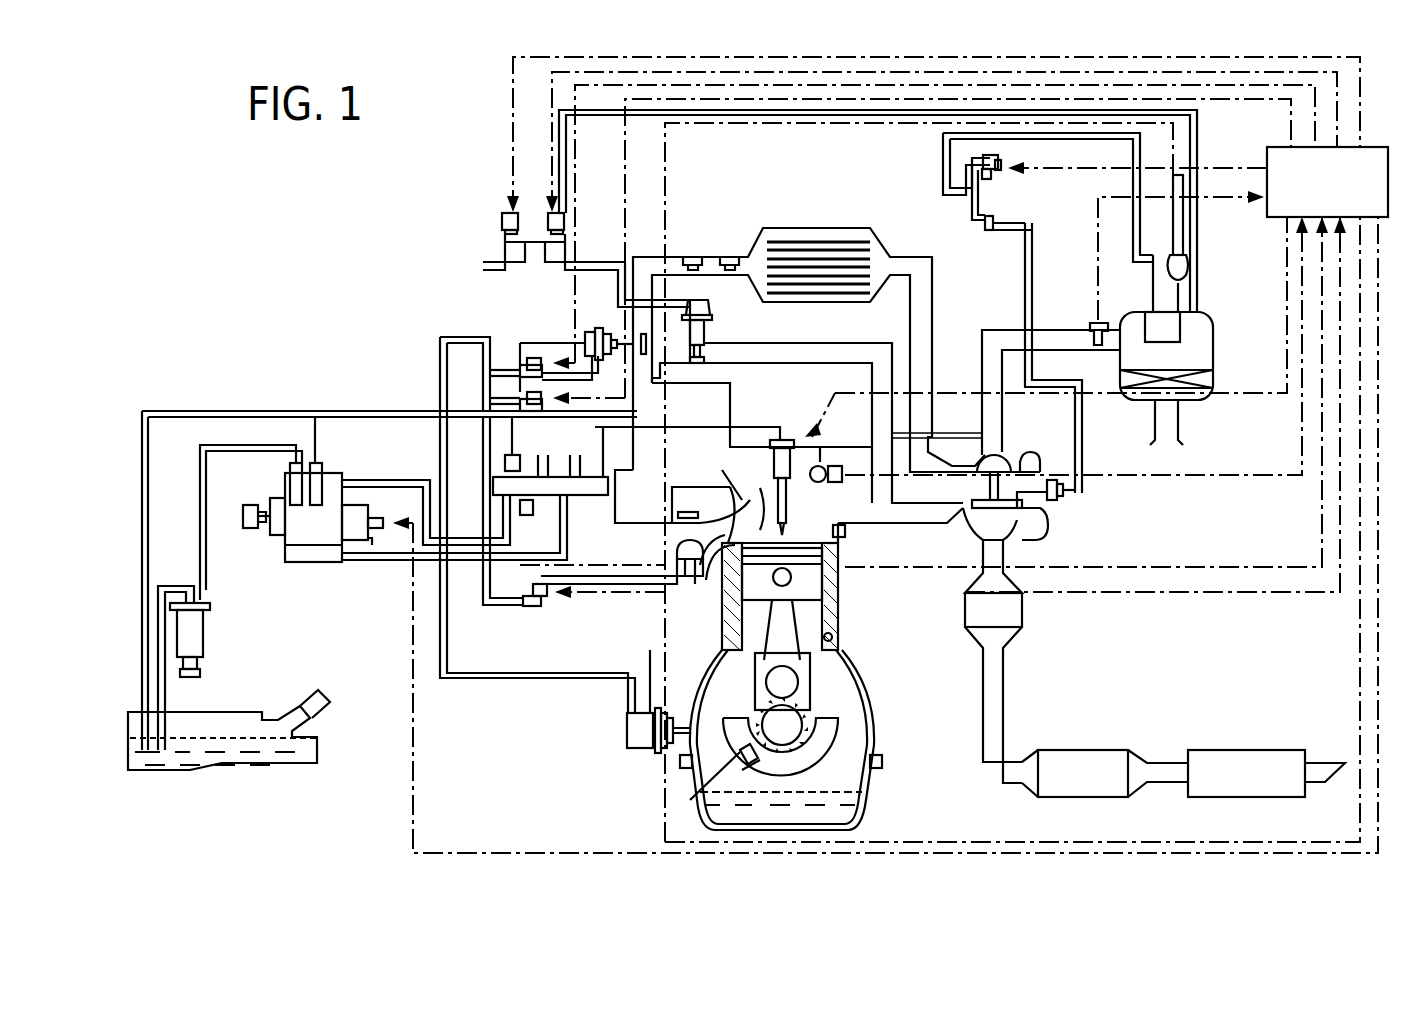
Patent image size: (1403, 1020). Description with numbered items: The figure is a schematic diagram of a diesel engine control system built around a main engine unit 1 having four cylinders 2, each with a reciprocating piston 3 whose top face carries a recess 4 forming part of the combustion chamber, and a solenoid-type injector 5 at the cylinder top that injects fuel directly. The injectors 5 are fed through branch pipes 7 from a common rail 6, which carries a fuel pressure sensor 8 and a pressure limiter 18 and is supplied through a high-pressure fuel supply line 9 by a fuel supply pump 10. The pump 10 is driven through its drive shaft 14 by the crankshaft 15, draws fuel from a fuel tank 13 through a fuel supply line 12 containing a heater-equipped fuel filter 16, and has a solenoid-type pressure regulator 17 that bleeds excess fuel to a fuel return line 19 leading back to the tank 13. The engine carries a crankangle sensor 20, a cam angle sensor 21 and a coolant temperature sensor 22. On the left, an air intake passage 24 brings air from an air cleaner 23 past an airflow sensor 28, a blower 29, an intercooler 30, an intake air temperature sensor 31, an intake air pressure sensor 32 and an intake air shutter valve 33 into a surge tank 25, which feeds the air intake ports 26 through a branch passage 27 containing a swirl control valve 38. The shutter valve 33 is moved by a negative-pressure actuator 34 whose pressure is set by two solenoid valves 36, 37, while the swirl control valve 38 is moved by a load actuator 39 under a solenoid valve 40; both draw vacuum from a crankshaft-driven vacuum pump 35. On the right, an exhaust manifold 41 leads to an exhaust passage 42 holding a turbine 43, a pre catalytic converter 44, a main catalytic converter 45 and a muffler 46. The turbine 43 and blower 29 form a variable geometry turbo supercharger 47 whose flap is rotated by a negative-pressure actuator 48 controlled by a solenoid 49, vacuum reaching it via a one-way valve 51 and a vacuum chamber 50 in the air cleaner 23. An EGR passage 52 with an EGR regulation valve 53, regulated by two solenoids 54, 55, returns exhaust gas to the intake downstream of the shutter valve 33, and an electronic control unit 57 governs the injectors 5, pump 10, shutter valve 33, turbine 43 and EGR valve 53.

The main engine unit 1 is at (880, 732).
The cylinder 2 is at (833, 637).
The piston 3 is at (813, 595).
The recess 4 is at (823, 573).
The injector 5 is at (798, 430).
The common rail 6 is at (493, 487).
The branch pipe 7 is at (595, 443).
The fuel pressure sensor 8 is at (525, 515).
The high-pressure fuel supply line 9 is at (370, 478).
The fuel supply pump 10 is at (313, 553).
The fuel supply line 12 is at (206, 559).
The fuel tank 13 is at (248, 775).
The drive shaft 14 is at (260, 502).
The crankshaft 15 is at (788, 732).
The fuel filter 16 is at (204, 638).
The pressure regulator 17 is at (382, 519).
The pressure limiter 18 is at (515, 468).
The fuel return line 19 is at (203, 411).
The crankangle sensor 20 is at (690, 715).
The cam angle sensor 21 is at (840, 464).
The coolant temperature sensor 22 is at (846, 534).
The air cleaner 23 is at (1193, 375).
The air intake passage 24 is at (639, 256).
The surge tank 25 is at (610, 513).
The air intake port 26 is at (705, 563).
The branch passage 27 is at (691, 503).
The airflow sensor 28 is at (1090, 325).
The blower 29 is at (1035, 455).
The intercooler 30 is at (810, 242).
The intake air temperature sensor 31 is at (727, 256).
The intake air pressure sensor 32 is at (689, 256).
The intake air shutter valve 33 is at (640, 337).
The negative-pressure actuator 34 is at (588, 336).
The vacuum pump 35 is at (632, 732).
The solenoid valve 36 is at (533, 358).
The solenoid valve 37 is at (514, 394).
The swirl control valve 38 is at (678, 533).
The load actuator 39 is at (678, 558).
The solenoid valve 40 is at (538, 606).
The exhaust manifold 41 is at (903, 526).
The exhaust passage 42 is at (1020, 699).
The turbine 43 is at (1025, 534).
The pre catalytic converter 44 is at (1018, 623).
The main catalytic converter 45 is at (1108, 750).
The muffler 46 is at (1261, 750).
The turbo supercharger 47 is at (971, 450).
The negative-pressure actuator 48 is at (1068, 496).
The solenoid 49 is at (1010, 178).
The vacuum chamber 50 is at (1180, 326).
The one-way valve 51 is at (1190, 264).
The EGR passage 52 is at (845, 359).
The EGR regulation valve 53 is at (705, 333).
The solenoid 54 is at (564, 224).
The solenoid 55 is at (502, 224).
The electronic control unit 57 is at (1327, 182).